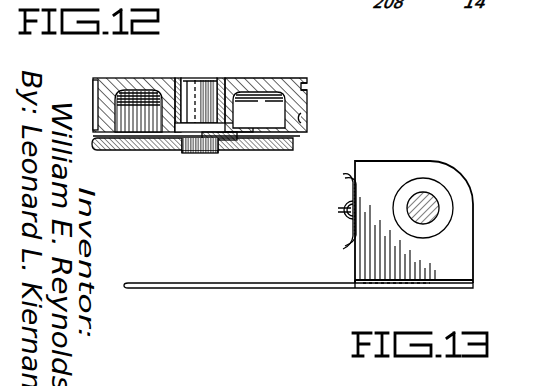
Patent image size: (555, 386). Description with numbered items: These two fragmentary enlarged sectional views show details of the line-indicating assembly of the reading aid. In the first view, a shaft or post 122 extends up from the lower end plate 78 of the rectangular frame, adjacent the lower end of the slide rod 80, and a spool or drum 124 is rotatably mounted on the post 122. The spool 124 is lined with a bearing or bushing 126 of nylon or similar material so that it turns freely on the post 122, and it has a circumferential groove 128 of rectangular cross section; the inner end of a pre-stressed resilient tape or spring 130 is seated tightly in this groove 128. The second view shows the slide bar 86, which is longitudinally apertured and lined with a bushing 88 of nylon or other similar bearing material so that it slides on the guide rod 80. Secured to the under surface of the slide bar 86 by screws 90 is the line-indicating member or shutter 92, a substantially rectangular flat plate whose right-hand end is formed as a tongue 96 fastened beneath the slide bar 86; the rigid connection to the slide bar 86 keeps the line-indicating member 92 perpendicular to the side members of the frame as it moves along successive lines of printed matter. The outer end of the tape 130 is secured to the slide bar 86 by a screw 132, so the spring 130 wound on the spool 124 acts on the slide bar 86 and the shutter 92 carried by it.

In FIG. 12, the lower end plate 78 is at (192, 161).
In FIG. 13, the guide or slide rod 80 is at (441, 170).
In FIG. 13, the slide bar 86 is at (446, 222).
In FIG. 13, the bushing 88 is at (451, 189).
In FIG. 13, the screws 90 is at (425, 299).
In FIG. 13, the line-indicating member or shutter 92 is at (298, 264).
In FIG. 13, the tongue 96 is at (334, 297).
In FIG. 12, the shaft or post 122 is at (214, 93).
In FIG. 12, the spool or drum 124 is at (266, 89).
In FIG. 12, the bearing or bushing 126 is at (196, 93).
In FIG. 12, the circumferential groove 128 is at (332, 124).
In FIG. 12, the pre-stressed resilient tape or spring 130 is at (341, 75).
In FIG. 13, the pre-stressed resilient tape or spring 130 is at (312, 211).
In FIG. 13, the screw 132 is at (307, 222).